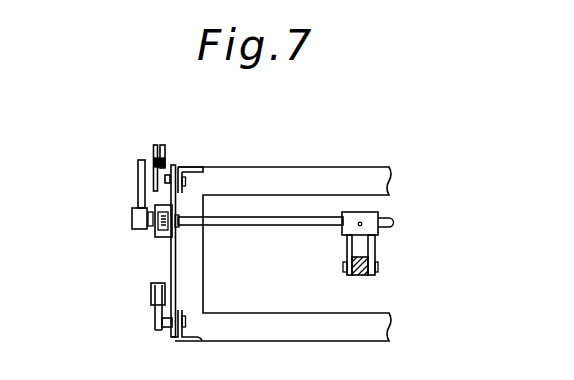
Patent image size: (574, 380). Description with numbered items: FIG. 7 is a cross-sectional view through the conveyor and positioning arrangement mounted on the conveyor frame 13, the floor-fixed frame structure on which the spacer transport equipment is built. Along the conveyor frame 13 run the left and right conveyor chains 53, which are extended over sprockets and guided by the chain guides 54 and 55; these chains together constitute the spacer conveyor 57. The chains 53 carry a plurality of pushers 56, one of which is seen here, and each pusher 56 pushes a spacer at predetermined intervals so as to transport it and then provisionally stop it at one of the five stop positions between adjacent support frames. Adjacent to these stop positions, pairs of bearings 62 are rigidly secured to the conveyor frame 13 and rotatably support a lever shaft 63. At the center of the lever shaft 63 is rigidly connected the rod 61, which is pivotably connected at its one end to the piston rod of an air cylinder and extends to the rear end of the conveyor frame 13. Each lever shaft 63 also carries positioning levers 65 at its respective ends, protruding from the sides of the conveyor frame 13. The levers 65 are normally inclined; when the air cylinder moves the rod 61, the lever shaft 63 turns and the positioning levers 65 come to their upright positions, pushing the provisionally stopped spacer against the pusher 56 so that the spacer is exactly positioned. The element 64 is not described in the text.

The conveyor frame 13 is at (300, 167).
The conveyor chains 53 is at (165, 163).
The chain guide 54 is at (158, 181).
The chain guide 55 is at (160, 312).
The pusher 56 is at (160, 147).
The spacer conveyor 57 is at (146, 295).
The rod 61 is at (358, 276).
The bearings 62 is at (157, 238).
The lever shaft 63 is at (245, 225).
The holder block 64 is at (352, 248).
The positioning lever 65 is at (141, 160).